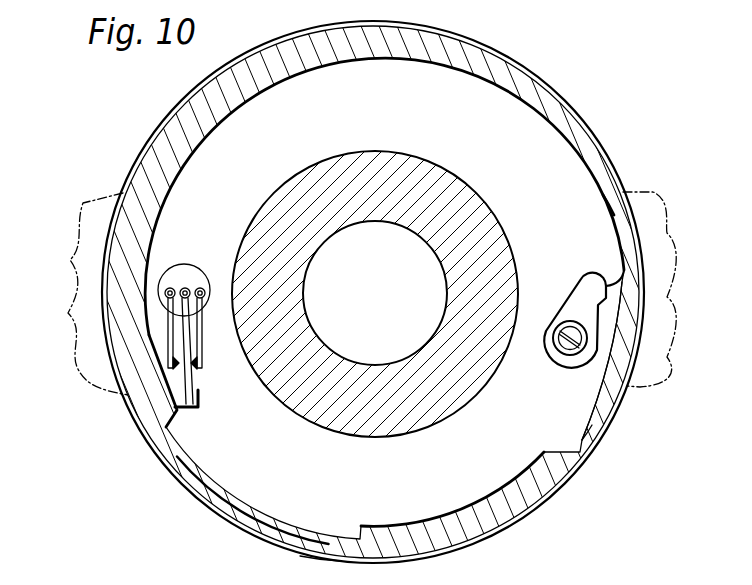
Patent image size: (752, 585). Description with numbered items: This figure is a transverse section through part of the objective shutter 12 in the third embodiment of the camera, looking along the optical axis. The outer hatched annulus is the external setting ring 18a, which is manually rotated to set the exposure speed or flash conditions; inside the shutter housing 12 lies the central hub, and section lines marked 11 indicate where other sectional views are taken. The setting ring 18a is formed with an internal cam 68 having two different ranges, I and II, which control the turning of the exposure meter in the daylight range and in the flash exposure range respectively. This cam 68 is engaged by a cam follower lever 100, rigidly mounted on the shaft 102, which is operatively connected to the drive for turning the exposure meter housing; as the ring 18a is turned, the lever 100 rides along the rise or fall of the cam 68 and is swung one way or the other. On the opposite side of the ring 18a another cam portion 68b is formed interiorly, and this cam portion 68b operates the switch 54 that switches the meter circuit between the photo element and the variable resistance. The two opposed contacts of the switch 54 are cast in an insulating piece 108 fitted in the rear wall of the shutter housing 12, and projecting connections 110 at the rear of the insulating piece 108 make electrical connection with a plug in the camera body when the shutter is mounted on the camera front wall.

The setting ring 18a is at (553, 477).
The objective shutter 12 is at (330, 427).
The section line 11- 11 is at (455, 294).
The insulating piece 108 is at (190, 277).
The switch 54 is at (200, 400).
The cam portion 68b is at (163, 373).
The internal cam 68 is at (610, 357).
The cam follower lever 100 is at (580, 287).
The shaft 102 is at (556, 347).
The daylight range of the cam I is at (597, 417).
The flash exposure range of the cam II is at (610, 208).
The projecting connections 110 is at (248, 570).